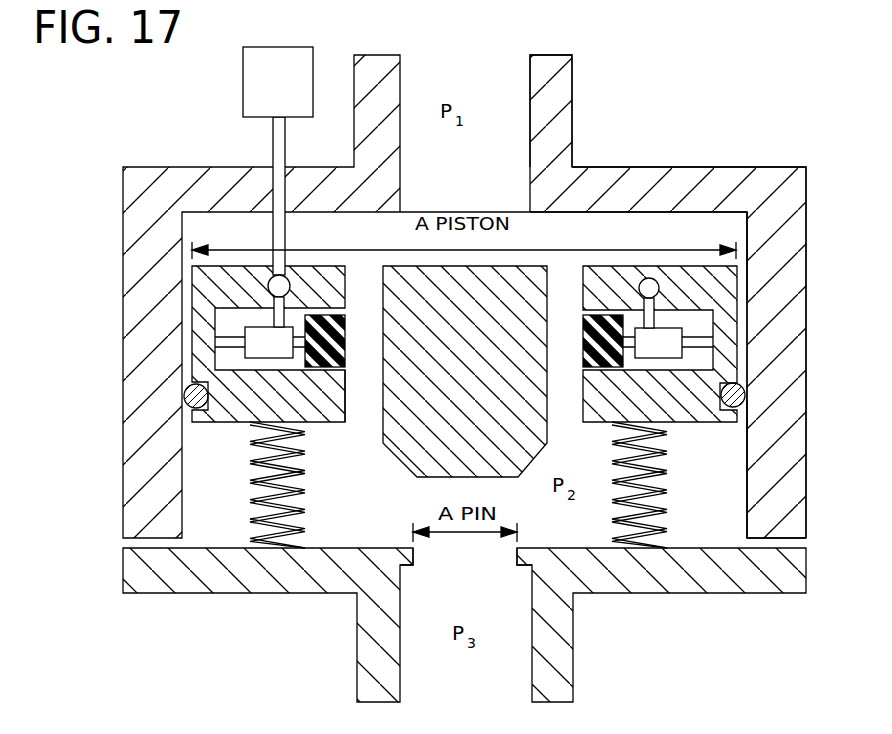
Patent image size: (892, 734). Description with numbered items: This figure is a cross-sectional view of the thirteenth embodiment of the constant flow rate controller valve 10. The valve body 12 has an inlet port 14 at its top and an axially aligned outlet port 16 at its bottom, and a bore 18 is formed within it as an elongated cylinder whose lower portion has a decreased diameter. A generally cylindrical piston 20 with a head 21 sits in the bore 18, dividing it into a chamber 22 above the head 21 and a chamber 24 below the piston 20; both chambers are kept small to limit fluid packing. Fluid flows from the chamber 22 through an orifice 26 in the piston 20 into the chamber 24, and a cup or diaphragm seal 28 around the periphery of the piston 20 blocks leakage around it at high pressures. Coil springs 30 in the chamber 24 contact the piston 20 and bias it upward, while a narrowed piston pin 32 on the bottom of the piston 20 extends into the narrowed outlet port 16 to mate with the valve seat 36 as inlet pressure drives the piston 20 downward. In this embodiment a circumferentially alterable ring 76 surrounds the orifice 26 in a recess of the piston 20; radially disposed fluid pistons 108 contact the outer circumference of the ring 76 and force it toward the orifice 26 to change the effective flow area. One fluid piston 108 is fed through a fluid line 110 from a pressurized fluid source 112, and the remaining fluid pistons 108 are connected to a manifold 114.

The constant flow rate controller valve 10 is at (664, 94).
The valve body 12 is at (588, 168).
The inlet port 14 is at (505, 84).
The outlet port 16 is at (503, 683).
The bore 18 is at (740, 362).
The piston 20 is at (708, 287).
The head 21 is at (641, 278).
The chamber 22 is at (715, 225).
The chamber 24 is at (727, 512).
The orifice 26 is at (367, 413).
The seal 28 is at (736, 401).
The springs 30 is at (257, 467).
The piston pin 32 is at (400, 458).
The valve seat 36 is at (517, 560).
The circumferentially alterable ring 76 is at (350, 317).
The fluid pistons 108 is at (270, 336).
The fluid line 110 is at (280, 227).
The fluid source 112 is at (243, 78).
The manifold 114 is at (639, 279).